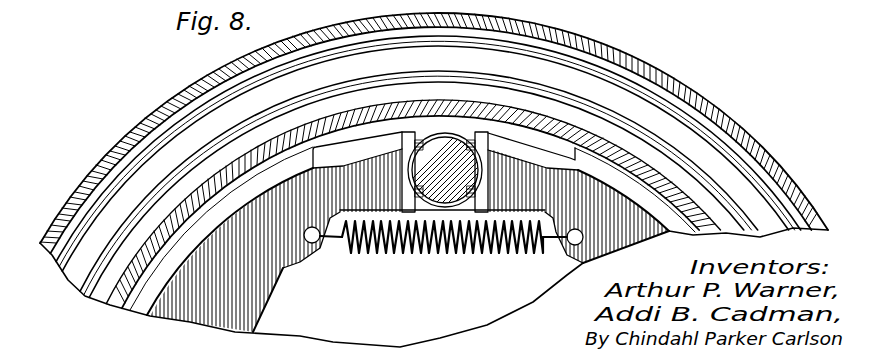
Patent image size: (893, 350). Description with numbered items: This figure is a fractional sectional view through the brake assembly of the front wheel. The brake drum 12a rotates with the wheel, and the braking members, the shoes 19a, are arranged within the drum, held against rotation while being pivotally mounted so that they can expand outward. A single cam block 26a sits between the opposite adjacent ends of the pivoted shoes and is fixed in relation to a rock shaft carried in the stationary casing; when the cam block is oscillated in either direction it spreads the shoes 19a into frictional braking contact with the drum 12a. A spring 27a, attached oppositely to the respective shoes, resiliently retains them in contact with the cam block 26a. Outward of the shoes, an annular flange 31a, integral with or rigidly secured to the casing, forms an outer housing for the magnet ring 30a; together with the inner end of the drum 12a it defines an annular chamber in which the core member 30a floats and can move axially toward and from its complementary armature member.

The annular flange 31a is at (648, 60).
The magnet ring 30a is at (205, 130).
The brake drum 12a is at (600, 172).
The brake shoes 19a is at (217, 227).
The cam block 26a is at (408, 170).
The spring 27a is at (381, 256).